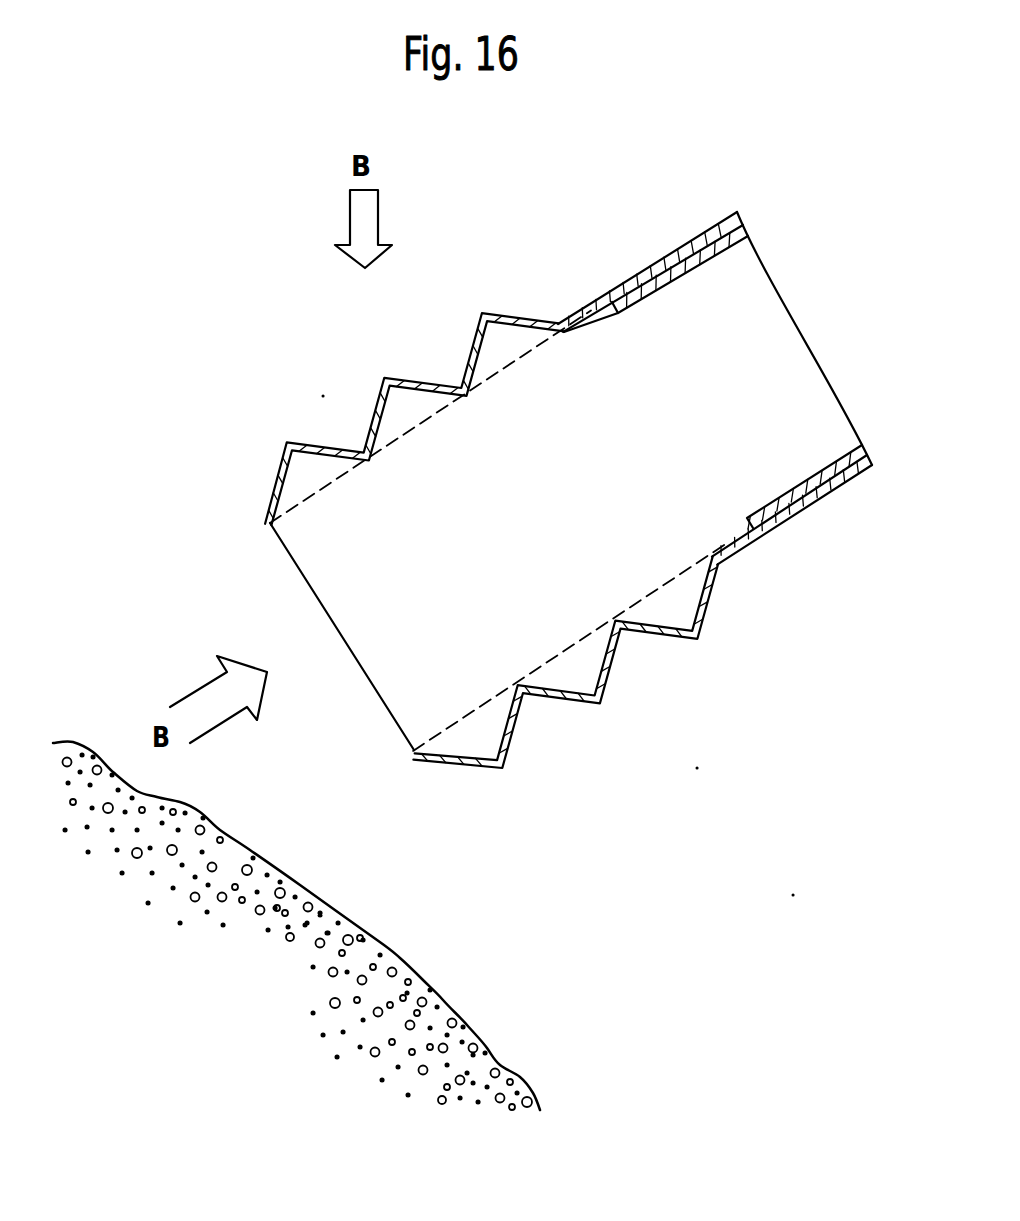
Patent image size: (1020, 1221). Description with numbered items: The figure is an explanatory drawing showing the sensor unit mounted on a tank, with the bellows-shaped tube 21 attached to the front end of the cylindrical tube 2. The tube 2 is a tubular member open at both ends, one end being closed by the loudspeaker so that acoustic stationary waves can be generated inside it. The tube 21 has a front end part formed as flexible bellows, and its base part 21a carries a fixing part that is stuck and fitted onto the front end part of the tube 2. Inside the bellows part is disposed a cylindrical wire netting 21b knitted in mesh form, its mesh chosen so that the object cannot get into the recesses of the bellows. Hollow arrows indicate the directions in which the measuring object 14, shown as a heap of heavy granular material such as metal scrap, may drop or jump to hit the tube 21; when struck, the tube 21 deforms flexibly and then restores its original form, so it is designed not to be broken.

The tube 2 is at (727, 249).
The measuring object 14 is at (296, 925).
The tube 21 is at (368, 400).
The base part 21a is at (616, 288).
The wire netting 21b is at (537, 660).